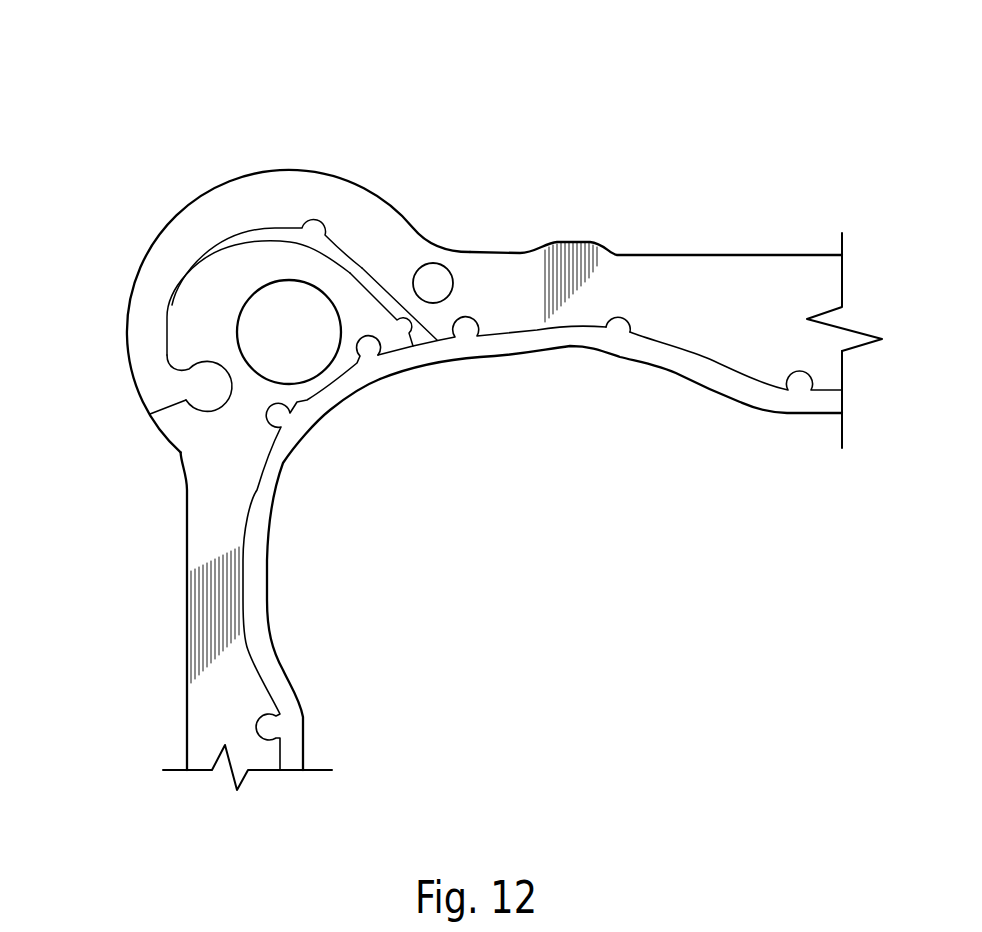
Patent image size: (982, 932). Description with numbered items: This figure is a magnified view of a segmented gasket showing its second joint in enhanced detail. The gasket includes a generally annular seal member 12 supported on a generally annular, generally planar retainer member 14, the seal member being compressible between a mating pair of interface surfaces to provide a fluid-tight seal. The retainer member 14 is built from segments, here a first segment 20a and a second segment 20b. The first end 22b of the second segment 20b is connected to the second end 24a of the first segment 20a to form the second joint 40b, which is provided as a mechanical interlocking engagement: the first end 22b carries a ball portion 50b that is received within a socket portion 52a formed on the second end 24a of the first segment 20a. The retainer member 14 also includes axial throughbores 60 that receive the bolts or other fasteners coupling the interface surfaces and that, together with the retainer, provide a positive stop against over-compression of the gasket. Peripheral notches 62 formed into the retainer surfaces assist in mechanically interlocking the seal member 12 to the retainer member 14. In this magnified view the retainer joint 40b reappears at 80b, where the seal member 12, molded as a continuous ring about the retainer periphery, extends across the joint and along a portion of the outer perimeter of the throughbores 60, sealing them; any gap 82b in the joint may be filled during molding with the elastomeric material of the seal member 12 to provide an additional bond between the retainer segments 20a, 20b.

The seal member 12 is at (842, 402).
The retainer member 14 is at (843, 278).
The first segment 20a is at (187, 663).
The second segment 20b is at (678, 255).
The first end of second segment 22b is at (134, 285).
The second end of first segment 24a is at (358, 273).
The second joint 40b is at (267, 301).
The ball portion 50b is at (222, 408).
The socket portion 52a is at (197, 367).
The throughbores 60 is at (302, 344).
The notches 62 is at (608, 320).
The retainer joint in magnified view 80b is at (630, 271).
The gap in joint 82b is at (243, 237).